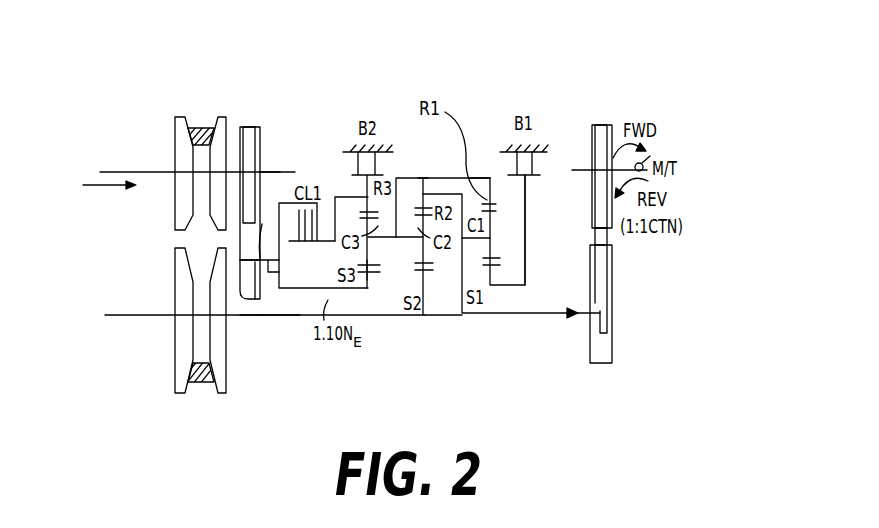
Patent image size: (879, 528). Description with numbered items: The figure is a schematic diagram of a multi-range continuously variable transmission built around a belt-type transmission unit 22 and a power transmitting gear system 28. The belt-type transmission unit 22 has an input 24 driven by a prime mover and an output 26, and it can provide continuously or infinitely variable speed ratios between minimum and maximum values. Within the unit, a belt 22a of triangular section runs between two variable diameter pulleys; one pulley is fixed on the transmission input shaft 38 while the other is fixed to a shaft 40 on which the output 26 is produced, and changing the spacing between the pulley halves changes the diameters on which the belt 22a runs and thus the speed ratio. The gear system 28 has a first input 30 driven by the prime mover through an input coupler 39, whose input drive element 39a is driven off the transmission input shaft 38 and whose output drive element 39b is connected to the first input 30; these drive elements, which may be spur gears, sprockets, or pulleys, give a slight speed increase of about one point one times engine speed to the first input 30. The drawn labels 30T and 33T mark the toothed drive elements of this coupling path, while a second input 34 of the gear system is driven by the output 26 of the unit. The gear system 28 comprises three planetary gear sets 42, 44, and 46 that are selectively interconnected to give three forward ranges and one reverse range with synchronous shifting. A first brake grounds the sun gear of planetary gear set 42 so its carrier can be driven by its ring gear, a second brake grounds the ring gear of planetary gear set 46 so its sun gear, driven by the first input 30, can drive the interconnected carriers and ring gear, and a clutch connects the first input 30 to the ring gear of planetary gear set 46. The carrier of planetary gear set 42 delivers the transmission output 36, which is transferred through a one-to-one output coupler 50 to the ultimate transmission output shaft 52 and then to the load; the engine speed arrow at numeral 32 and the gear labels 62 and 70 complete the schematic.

The belt-type transmission unit 22 is at (536, 45).
The belt 22a is at (210, 117).
The input 24 is at (140, 180).
The output 26 is at (231, 322).
The power transmitting gear system 28 is at (441, 312).
The first input 30 is at (263, 222).
The gear teeth 30T is at (252, 306).
The engine 32 is at (138, 172).
The clutch teeth 33T is at (266, 175).
The second input 34 is at (278, 317).
The transmission output 36 is at (578, 313).
The transmission input shaft 38 is at (180, 117).
The input coupler 39 is at (263, 127).
The input drive element 39a is at (266, 172).
The output drive element 39b is at (262, 272).
The shaft 40 is at (228, 365).
The planetary gear set 42 is at (482, 178).
The planetary gear set 44 is at (423, 178).
The planetary gear set 46 is at (370, 278).
The output coupler 50 is at (624, 111).
The transmission output shaft 52 is at (650, 156).
The gear 62 is at (385, 205).
The gear 70 is at (501, 210).